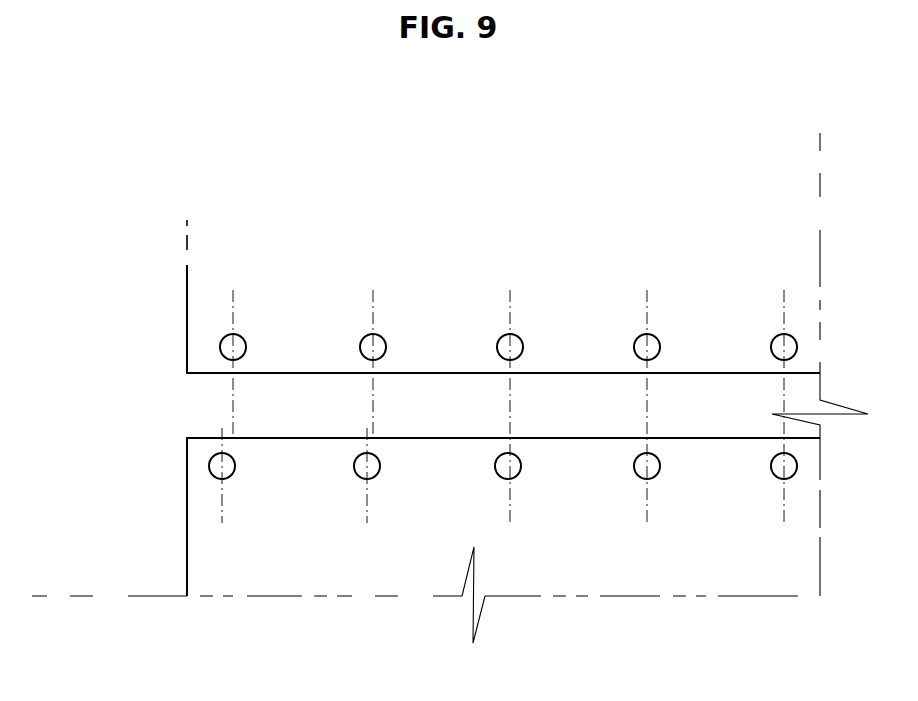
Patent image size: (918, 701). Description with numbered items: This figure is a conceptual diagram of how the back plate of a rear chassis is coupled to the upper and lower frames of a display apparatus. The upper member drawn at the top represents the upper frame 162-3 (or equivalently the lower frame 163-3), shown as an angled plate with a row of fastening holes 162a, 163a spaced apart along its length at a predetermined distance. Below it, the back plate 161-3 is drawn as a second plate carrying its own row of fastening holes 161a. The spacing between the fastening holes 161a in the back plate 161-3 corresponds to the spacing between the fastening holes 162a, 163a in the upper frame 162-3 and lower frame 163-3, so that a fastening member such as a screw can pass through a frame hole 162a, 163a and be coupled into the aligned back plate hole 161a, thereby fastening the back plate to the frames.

The upper frame (in FIG. 9 coupling view) 162-3 is at (207, 323).
The lower frame (in FIG. 9 coupling view) 163-3 is at (527, 392).
The fastening hole of upper frame 162a is at (498, 342).
The fastening hole of lower frame 163a is at (508, 347).
The back plate (in FIG. 9 coupling view) 161-3 is at (205, 530).
The fastening hole of back plate 161a is at (495, 477).